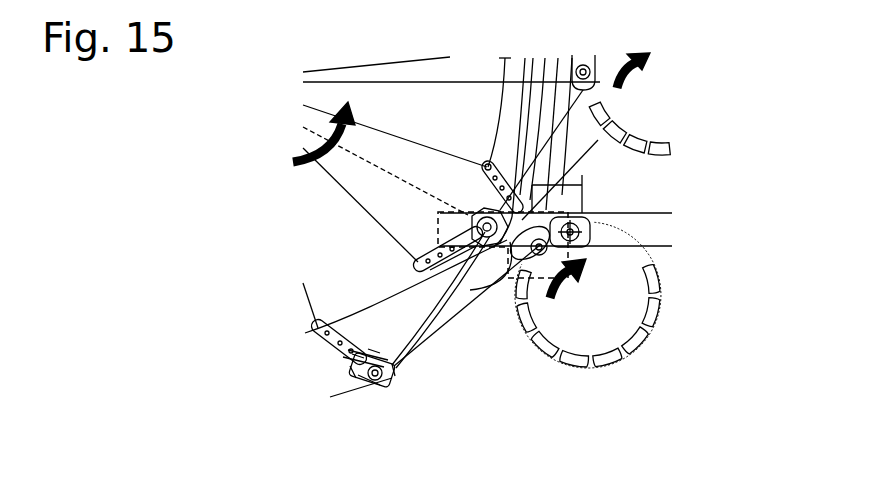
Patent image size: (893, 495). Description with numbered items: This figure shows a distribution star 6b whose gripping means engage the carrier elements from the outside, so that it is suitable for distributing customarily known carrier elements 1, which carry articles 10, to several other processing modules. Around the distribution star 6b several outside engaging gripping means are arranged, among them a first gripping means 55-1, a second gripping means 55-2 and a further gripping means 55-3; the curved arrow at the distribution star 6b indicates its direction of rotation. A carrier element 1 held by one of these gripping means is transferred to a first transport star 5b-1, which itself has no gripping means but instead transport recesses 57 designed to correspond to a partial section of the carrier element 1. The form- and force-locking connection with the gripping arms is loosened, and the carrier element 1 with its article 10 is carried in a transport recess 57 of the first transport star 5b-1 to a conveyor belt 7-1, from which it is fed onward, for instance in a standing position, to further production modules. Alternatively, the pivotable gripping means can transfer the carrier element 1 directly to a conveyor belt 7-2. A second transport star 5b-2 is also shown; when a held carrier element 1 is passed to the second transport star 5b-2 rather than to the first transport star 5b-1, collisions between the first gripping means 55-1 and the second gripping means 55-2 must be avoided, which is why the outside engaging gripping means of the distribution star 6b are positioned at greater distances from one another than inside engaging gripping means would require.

The distribution star 6b is at (290, 107).
The first gripping means 55-1 is at (486, 167).
The second gripping means 55-2 is at (418, 268).
The third lever link 55-3 is at (318, 327).
The second transport star 5b-2 is at (698, 98).
The first transport star 5b-1 is at (618, 322).
The carrier element 1 is at (377, 392).
The article 10 is at (385, 386).
The conveyor belt 7-1 is at (668, 236).
The conveyor belt 7-2 is at (668, 196).
The transport recess 57 is at (536, 340).